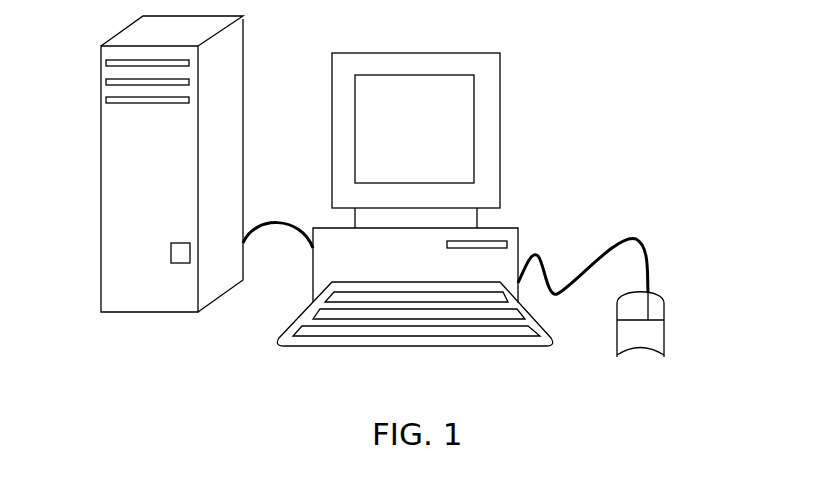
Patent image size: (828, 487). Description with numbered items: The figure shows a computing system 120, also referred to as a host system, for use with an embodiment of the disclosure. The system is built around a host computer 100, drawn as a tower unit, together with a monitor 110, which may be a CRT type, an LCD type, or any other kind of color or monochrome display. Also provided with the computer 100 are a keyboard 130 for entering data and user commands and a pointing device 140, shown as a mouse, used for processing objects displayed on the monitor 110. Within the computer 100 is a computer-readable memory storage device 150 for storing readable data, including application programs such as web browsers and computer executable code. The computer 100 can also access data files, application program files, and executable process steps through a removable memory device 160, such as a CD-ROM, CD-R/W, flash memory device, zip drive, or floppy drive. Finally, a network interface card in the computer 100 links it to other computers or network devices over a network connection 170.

The host computer 100 is at (170, 305).
The monitor 110 is at (437, 128).
The computing system 120 is at (98, 360).
The keyboard 130 is at (432, 346).
The pointing device 140 is at (655, 333).
The computer-readable memory storage device 150 is at (113, 72).
The removable memory device 160 is at (113, 100).
The network connection 170 is at (171, 250).